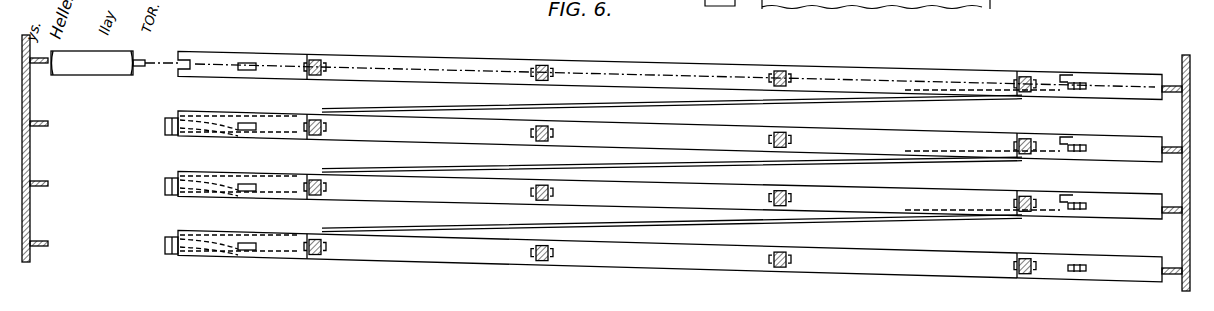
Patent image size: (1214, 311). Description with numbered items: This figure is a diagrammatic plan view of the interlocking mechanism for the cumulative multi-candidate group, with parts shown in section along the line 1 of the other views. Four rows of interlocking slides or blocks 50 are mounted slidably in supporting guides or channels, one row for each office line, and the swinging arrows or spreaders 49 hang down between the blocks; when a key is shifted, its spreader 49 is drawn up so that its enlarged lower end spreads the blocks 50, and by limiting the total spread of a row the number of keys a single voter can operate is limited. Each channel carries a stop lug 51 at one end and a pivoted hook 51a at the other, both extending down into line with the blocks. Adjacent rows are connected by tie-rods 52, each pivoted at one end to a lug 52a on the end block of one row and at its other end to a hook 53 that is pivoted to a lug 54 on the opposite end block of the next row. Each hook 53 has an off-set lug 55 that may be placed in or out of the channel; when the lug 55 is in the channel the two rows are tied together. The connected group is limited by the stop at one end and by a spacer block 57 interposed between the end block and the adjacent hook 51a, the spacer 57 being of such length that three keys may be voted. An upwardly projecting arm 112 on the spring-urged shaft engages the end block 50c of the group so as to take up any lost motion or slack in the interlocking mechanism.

The section line 1 is at (42, 52).
The swinging arrows or spreaders 49 is at (316, 78).
The interlocking slides or blocks 50 is at (292, 134).
The end block 50c is at (297, 47).
The stop lug 51 is at (1176, 94).
The pivoted hook 51a is at (46, 66).
The tie-rods 52 is at (700, 104).
The lug 52a is at (1084, 95).
The hook 53 is at (215, 114).
The lug 54 is at (255, 123).
The off-set lug 55 is at (164, 133).
The spacer block 57 is at (137, 72).
The upwardly projecting arm 112 is at (148, 61).